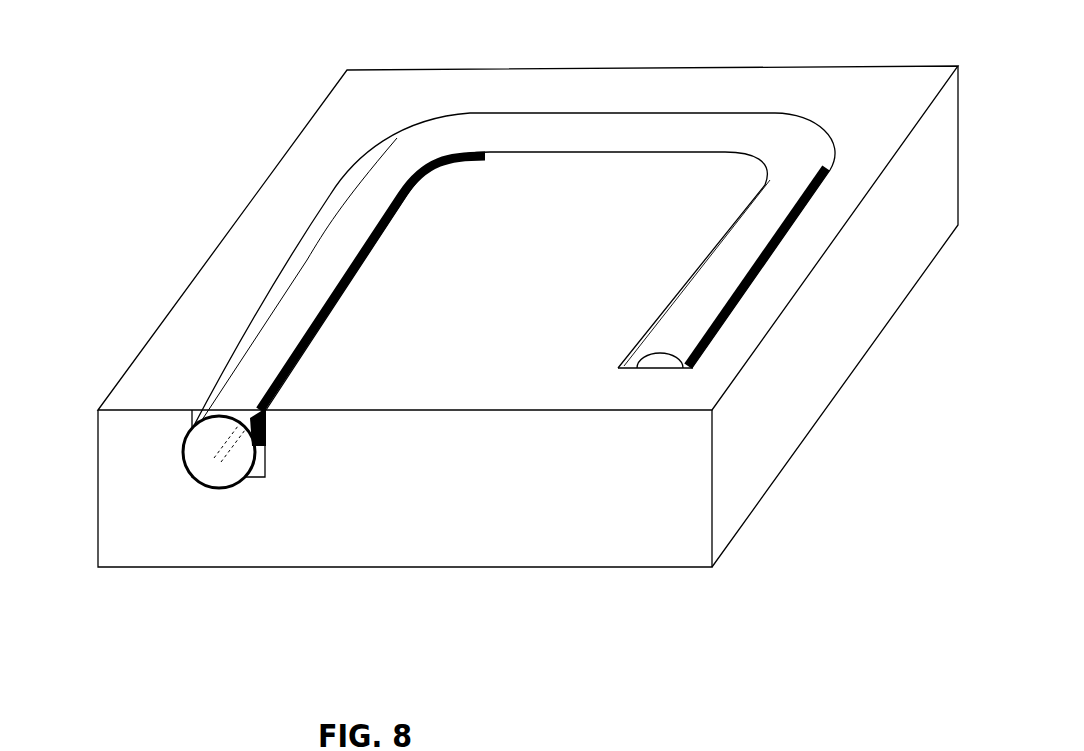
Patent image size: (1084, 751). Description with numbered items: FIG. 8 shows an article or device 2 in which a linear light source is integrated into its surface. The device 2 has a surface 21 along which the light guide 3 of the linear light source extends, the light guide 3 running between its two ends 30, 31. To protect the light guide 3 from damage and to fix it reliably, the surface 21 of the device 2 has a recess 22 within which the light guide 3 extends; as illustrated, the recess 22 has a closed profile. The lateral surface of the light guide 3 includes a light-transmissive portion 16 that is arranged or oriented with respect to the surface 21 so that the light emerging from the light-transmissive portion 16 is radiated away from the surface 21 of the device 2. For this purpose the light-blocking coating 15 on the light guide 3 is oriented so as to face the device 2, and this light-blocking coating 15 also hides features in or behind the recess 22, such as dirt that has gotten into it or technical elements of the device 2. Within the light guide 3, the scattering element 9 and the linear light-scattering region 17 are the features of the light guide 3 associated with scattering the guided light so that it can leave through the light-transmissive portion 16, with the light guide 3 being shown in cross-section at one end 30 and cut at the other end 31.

The device 2 is at (500, 283).
The surface of device 21 is at (378, 107).
The recess 22 is at (198, 395).
The light guide 3 is at (479, 376).
The light-transmissive portion 16 is at (286, 314).
The light-blocking coating 15 is at (265, 445).
The end of light guide 30 is at (197, 490).
The end of light guide 31 is at (655, 370).
The scattering element 9 is at (218, 457).
The linear light-scattering region 17 is at (233, 590).